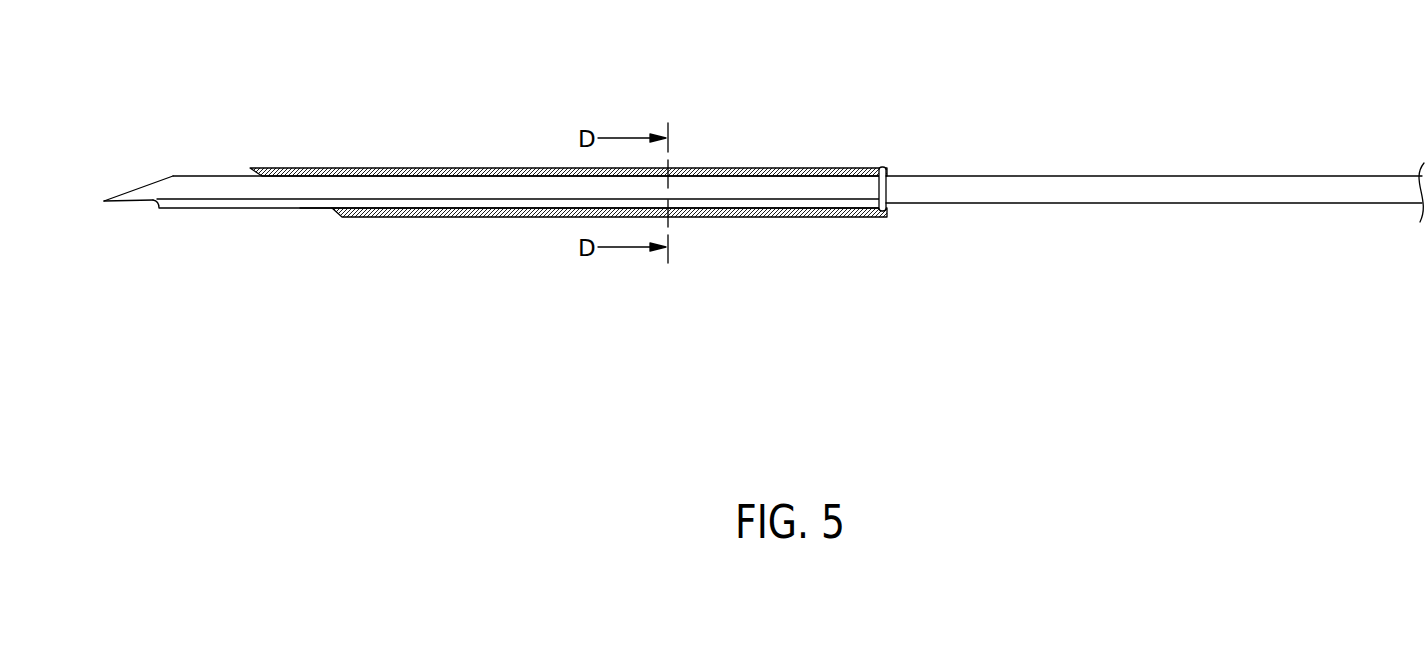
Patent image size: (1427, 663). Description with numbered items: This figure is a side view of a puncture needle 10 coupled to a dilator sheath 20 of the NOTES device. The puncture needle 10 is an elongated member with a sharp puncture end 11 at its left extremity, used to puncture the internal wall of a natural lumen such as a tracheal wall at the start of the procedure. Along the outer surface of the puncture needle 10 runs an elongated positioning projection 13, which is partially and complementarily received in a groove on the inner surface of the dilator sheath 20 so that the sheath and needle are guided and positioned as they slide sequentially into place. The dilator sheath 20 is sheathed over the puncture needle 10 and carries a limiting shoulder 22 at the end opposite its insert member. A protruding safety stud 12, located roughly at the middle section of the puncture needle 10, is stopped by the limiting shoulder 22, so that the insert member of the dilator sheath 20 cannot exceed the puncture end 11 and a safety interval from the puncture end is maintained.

The puncture needle 10 is at (222, 185).
The puncture end 11 is at (125, 200).
The protruding safety stud 12 is at (887, 192).
The elongated positioning projection 13 is at (323, 205).
The dilator sheath 20 is at (717, 165).
The limiting shoulder 22 is at (890, 170).